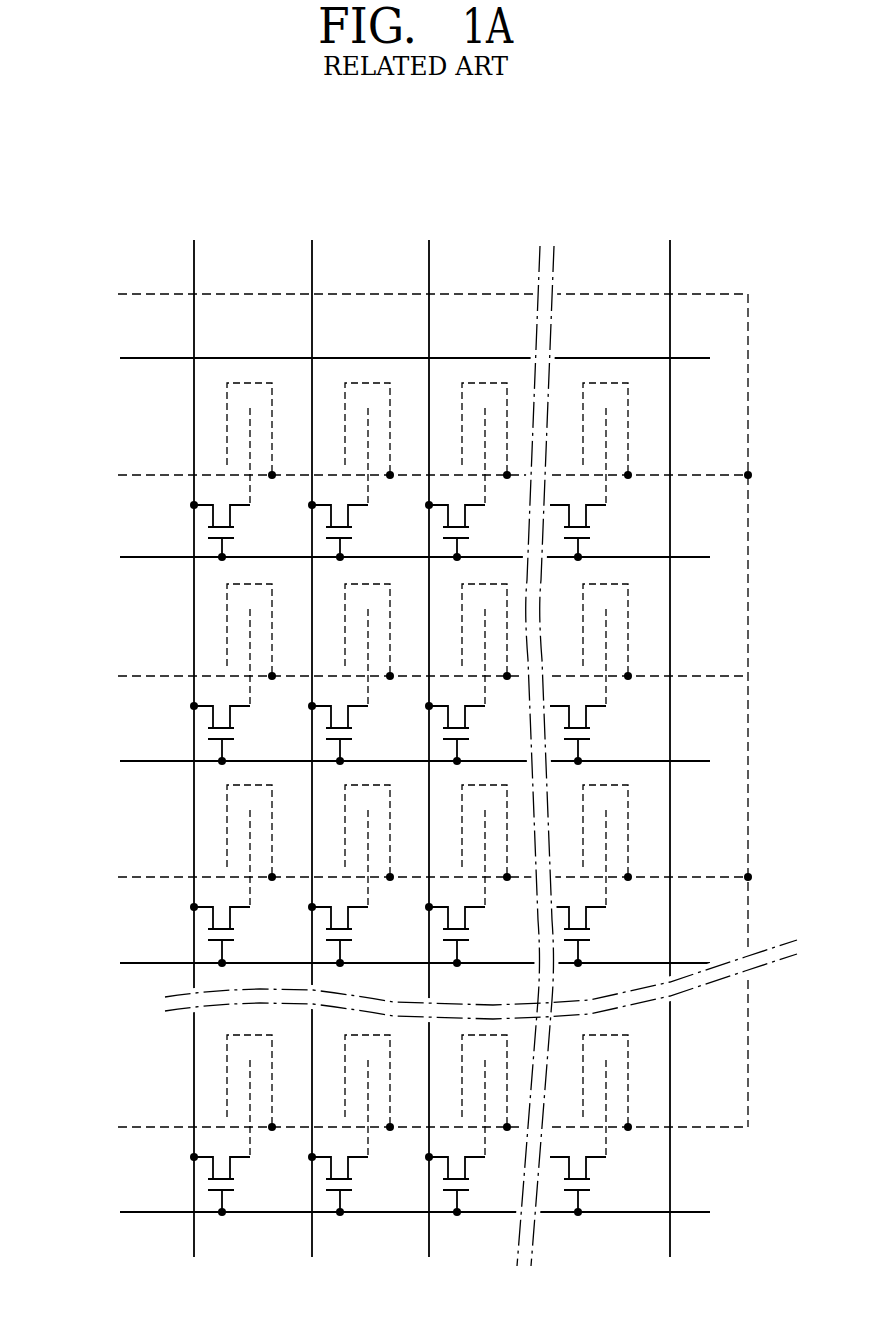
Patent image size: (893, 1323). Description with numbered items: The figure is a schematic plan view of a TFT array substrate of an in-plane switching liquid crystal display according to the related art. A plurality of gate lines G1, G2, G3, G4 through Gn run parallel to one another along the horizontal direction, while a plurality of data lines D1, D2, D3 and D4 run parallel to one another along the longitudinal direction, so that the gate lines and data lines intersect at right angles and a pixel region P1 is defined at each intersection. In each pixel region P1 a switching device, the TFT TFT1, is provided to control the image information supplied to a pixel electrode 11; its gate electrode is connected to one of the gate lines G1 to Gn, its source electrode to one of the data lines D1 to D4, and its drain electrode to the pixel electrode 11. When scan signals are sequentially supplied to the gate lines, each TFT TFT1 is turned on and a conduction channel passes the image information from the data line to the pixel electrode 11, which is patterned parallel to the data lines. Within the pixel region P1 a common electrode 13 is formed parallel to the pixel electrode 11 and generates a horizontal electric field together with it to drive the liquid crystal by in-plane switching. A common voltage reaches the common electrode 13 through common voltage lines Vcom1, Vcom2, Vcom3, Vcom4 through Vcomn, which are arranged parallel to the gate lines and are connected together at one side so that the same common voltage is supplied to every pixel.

The pixel region P1 is at (176, 387).
The common electrode 13 is at (228, 405).
The pixel electrode 11 is at (250, 440).
The TFT TFT1 is at (197, 525).
The data line D1 is at (194, 735).
The data line D2 is at (312, 735).
The data line D3 is at (429, 735).
The data line D4 is at (670, 735).
The gate line G1 is at (400, 358).
The gate line G2 is at (400, 557).
The gate line G3 is at (400, 761).
The gate line G4 is at (400, 963).
The gate line Gn is at (400, 1212).
The common voltage line Vcom1 is at (400, 705).
The common voltage line Vcom2 is at (402, 475).
The common voltage line Vcom3 is at (400, 676).
The common voltage line Vcom4 is at (402, 877).
The common voltage line Vcomn is at (397, 1127).